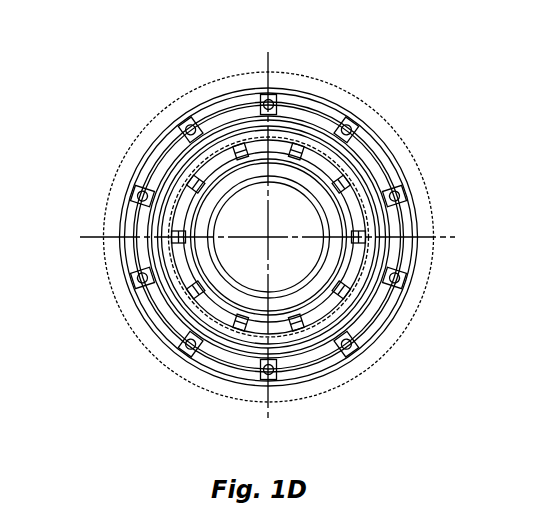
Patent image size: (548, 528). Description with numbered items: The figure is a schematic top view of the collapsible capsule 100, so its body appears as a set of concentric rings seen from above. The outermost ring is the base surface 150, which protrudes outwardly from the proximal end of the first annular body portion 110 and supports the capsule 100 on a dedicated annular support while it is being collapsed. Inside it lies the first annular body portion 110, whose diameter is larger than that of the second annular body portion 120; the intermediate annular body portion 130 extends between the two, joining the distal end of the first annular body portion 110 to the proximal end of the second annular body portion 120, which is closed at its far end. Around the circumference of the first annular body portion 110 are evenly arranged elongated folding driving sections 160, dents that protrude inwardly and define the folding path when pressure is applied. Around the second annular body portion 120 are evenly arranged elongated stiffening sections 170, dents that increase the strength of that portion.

The capsule 100 is at (70, 33).
The first annular body portion 110 is at (402, 250).
The second annular body portion 120 is at (278, 187).
The intermediate annular body portion 130 is at (358, 177).
The base surface 150 is at (402, 317).
The elongated folding driving sections 160 is at (143, 279).
The elongated stiffening sections 170 is at (240, 150).